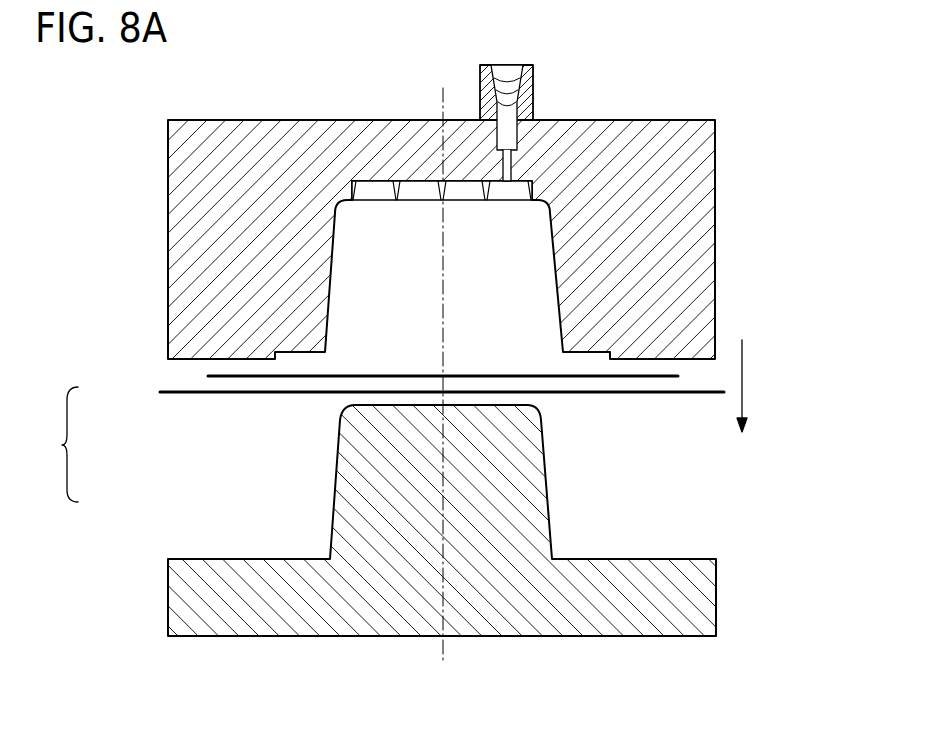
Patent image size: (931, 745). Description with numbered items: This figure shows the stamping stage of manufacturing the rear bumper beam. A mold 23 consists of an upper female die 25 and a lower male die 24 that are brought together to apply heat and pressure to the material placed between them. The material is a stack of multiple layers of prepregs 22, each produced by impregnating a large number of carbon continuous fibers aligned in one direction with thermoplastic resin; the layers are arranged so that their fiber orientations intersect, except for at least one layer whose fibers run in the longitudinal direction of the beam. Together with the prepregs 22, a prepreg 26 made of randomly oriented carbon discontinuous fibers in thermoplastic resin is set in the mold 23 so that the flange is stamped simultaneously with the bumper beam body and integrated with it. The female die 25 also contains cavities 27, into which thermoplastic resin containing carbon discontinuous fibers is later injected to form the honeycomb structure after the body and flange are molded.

The prepreg 22 is at (387, 373).
The mold 23 is at (57, 444).
The male die 24 is at (170, 588).
The female die 25 is at (168, 305).
The prepreg 26 is at (259, 394).
The cavities 27 is at (372, 193).